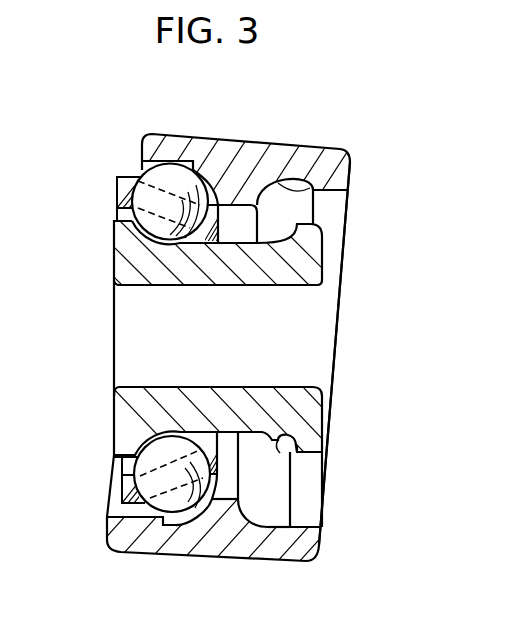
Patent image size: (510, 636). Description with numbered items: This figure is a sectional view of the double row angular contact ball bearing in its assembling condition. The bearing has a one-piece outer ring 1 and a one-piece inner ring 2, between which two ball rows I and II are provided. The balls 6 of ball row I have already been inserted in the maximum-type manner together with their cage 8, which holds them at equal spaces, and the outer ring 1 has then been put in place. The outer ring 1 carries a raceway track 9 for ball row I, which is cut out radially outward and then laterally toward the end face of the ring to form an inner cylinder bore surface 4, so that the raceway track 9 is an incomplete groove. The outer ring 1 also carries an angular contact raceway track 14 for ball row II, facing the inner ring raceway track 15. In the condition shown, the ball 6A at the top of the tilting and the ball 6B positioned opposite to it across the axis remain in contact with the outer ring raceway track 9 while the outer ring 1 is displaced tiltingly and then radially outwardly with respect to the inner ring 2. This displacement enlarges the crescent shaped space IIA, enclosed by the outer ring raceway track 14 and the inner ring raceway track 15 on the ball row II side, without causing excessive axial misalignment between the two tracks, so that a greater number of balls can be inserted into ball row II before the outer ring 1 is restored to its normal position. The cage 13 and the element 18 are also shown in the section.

The outer ring 1 is at (291, 157).
The inner ring 2 is at (293, 254).
The inner cylinder bore surface 4 is at (128, 168).
The balls 6 is at (172, 177).
The ball 6A is at (159, 173).
The ball 6B is at (122, 503).
The cage 8 is at (120, 491).
The raceway track 9 is at (212, 181).
The cage 13 is at (206, 180).
The angular contact raceway track 14 is at (348, 151).
The inner ring raceway track 15 is at (300, 452).
The raceway bottom surface 18 is at (181, 432).
The ball row I is at (150, 478).
The ball row II is at (267, 484).
The crescent shaped space IIA is at (267, 500).